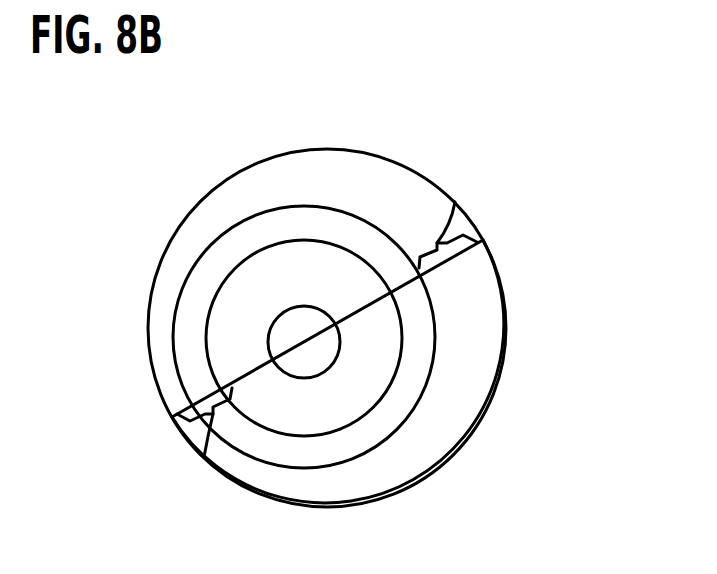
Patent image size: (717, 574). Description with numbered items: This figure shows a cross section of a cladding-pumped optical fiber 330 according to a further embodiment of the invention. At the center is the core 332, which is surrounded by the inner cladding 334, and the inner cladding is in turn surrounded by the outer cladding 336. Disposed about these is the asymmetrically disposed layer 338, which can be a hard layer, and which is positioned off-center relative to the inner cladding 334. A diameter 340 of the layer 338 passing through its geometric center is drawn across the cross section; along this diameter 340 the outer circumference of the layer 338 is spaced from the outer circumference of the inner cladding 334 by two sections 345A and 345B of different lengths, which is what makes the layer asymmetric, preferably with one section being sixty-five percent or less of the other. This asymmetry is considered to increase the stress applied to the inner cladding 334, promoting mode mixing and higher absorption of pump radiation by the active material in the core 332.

The optical fiber 330 is at (186, 195).
The core 332 is at (273, 318).
The inner cladding 334 is at (322, 421).
The outer cladding 336 is at (313, 230).
The asymmetrically disposed layer 338 is at (467, 375).
The diameter 340 is at (236, 380).
The section 345A is at (204, 457).
The section 345B is at (455, 202).